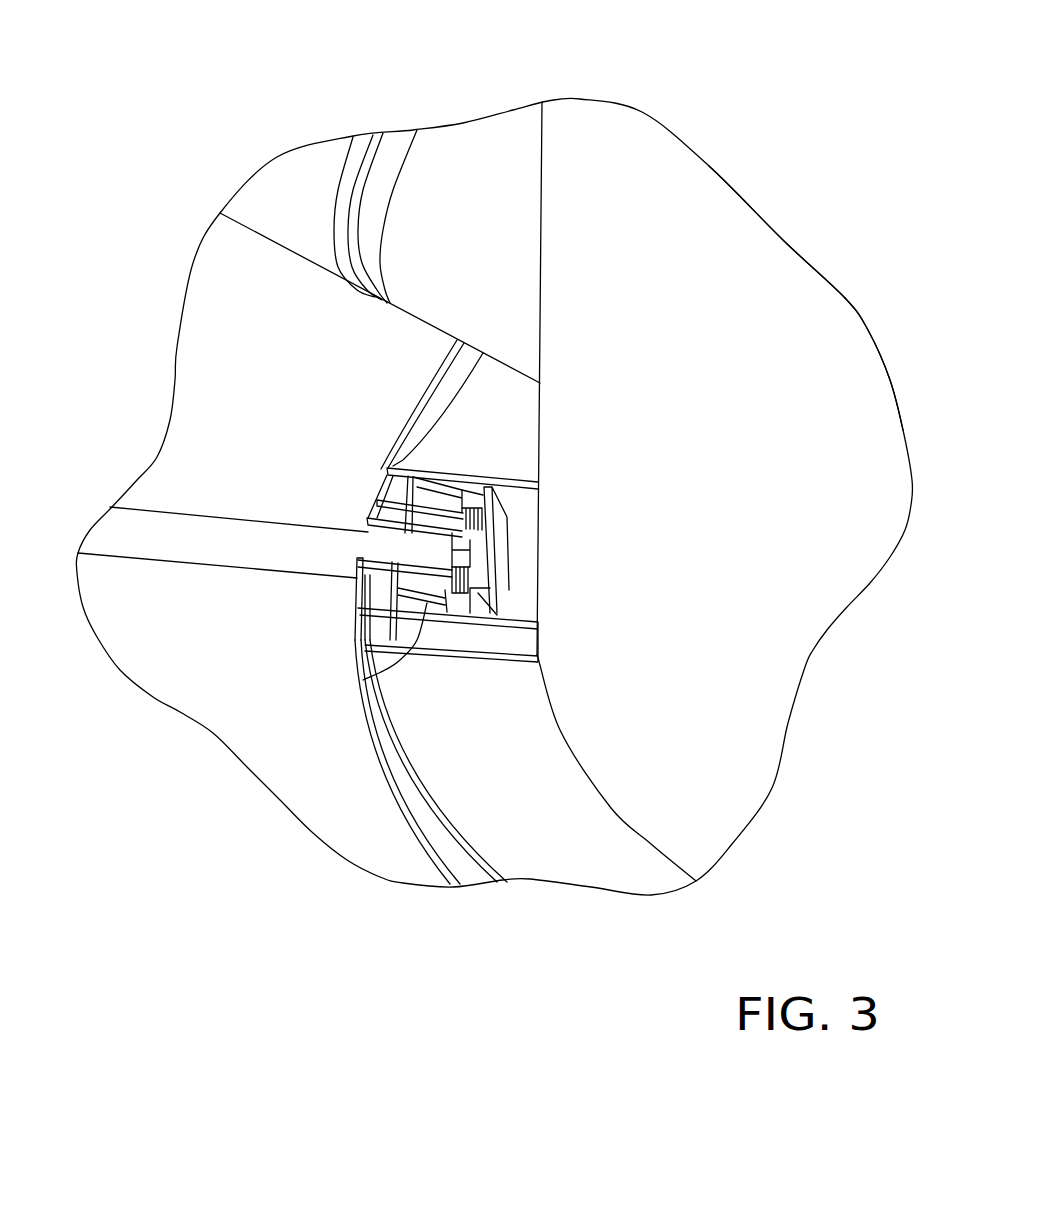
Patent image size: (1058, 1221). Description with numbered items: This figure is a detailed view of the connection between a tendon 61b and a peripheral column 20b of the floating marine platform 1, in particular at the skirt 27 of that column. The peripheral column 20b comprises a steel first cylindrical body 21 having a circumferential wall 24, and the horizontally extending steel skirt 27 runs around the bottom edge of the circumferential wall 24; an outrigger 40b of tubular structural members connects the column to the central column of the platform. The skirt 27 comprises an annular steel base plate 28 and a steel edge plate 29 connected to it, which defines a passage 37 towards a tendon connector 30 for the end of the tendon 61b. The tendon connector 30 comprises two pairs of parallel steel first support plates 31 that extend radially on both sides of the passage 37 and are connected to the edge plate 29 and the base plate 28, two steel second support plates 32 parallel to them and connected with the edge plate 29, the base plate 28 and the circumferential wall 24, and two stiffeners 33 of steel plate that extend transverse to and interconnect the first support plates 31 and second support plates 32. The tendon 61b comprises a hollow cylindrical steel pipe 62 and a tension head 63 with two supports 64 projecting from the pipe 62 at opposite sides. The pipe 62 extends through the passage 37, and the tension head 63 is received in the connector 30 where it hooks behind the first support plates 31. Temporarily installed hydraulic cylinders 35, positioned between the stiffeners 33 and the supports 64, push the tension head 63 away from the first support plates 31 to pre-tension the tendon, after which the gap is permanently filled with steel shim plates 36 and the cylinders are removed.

The floating marine platform 1 is at (713, 167).
The first cylindrical body 21 is at (570, 129).
The peripheral column 20b is at (757, 263).
The circumferential wall 24 is at (799, 330).
The outrigger 40b is at (282, 180).
The hollow cylindrical steel pipe 62 is at (198, 525).
The tendon 61b is at (146, 550).
The first support plates 31 is at (431, 481).
The stiffeners 33 is at (382, 492).
The hydraulic cylinders 35 is at (444, 498).
The second support plates 32 is at (477, 483).
The passage 37 is at (360, 527).
The steel shim plates 36 is at (505, 519).
The tension head 63 is at (492, 560).
The supports 64 is at (504, 514).
The tendon connector 30 is at (493, 643).
The annular steel base plate 28 is at (546, 753).
The steel edge plate 29 is at (387, 743).
The skirt 27 is at (393, 807).